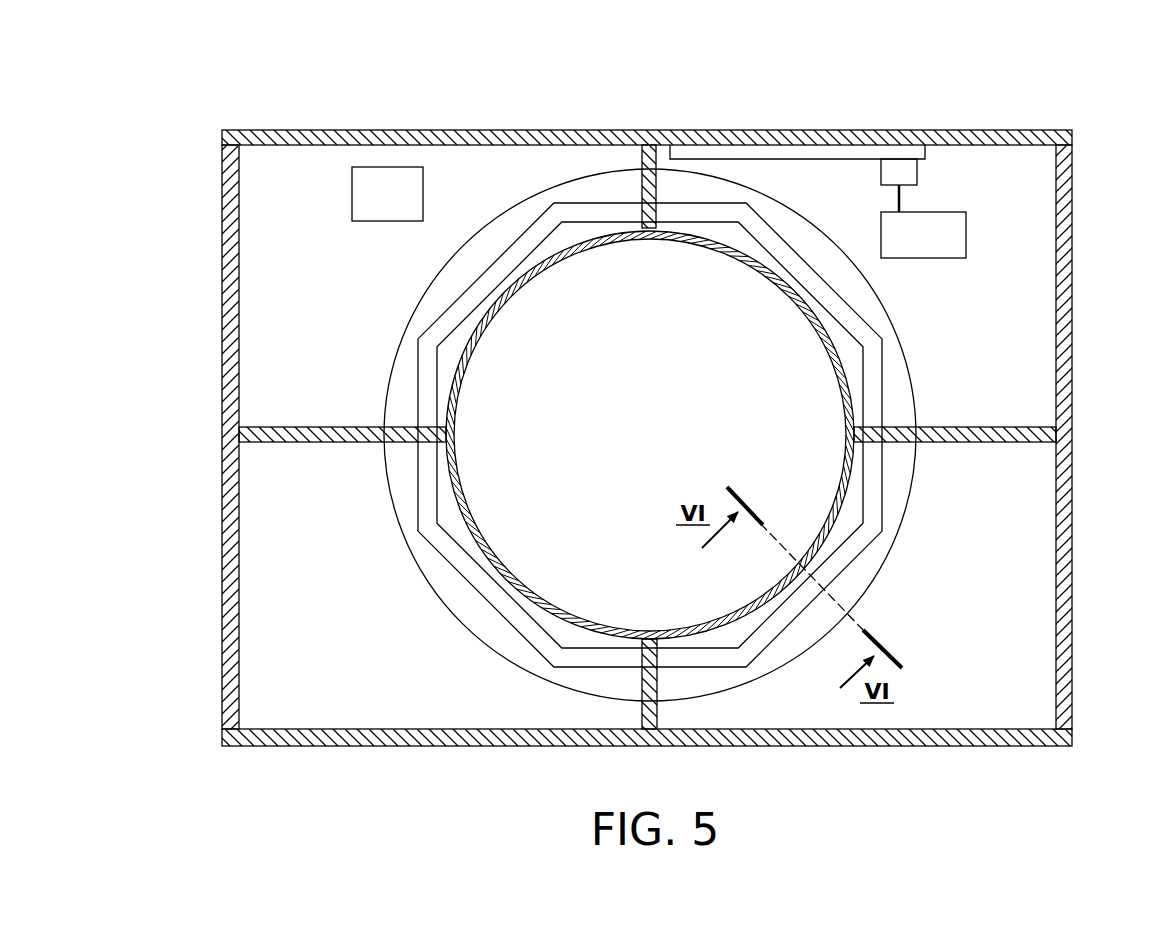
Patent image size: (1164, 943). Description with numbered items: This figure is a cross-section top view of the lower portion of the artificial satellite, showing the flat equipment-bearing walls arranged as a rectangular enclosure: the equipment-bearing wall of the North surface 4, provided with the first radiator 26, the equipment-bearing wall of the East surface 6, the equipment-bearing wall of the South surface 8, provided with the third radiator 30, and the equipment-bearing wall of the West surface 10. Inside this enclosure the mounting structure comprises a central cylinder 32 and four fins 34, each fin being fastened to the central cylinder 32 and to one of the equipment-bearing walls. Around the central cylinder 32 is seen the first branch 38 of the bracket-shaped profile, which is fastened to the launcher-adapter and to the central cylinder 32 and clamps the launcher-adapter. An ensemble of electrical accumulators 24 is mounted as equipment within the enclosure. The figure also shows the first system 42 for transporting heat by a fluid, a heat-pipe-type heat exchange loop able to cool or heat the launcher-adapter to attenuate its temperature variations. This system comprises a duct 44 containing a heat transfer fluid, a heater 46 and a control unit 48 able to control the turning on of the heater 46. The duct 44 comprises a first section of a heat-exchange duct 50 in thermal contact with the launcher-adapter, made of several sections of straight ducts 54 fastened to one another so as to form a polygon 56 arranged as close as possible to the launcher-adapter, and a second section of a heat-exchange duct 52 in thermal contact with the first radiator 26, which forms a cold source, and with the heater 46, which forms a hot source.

The equipment-bearing wall of the North surface 4 is at (647, 104).
The first radiator 26 is at (750, 130).
The equipment-bearing wall of the East surface 6 is at (1073, 310).
The equipment-bearing wall of the South surface 8 is at (647, 775).
The third radiator 30 is at (945, 746).
The equipment-bearing wall of the West surface 10 is at (640, 442).
The ensemble of electrical accumulators 24 is at (382, 221).
The central cylinder 32 is at (508, 573).
The fin 34 is at (975, 438).
The first branch 38 is at (912, 377).
The first system for transporting heat by a fluid 42 is at (676, 142).
The duct 44 is at (650, 435).
The section of straight duct 54 is at (817, 283).
The heater 46 is at (917, 172).
The control unit 48 is at (932, 258).
The first section of a heat-exchange duct 50 is at (650, 435).
The polygon 56 is at (597, 237).
The second section of a heat-exchange duct 52 is at (897, 152).